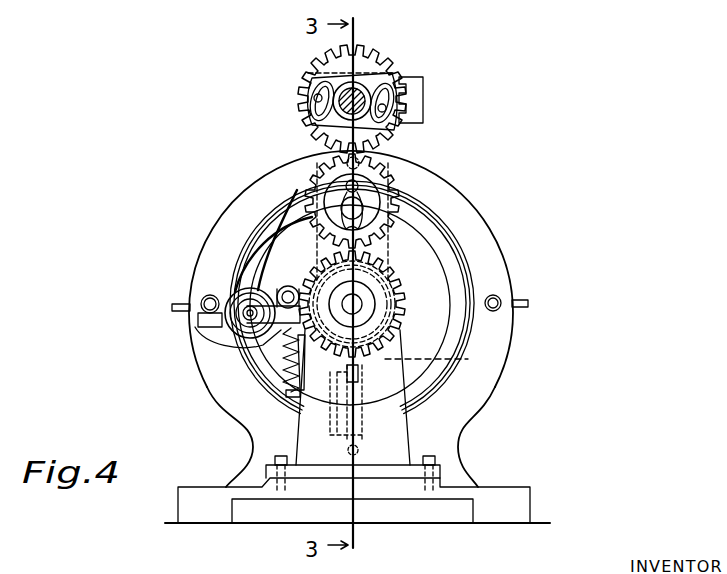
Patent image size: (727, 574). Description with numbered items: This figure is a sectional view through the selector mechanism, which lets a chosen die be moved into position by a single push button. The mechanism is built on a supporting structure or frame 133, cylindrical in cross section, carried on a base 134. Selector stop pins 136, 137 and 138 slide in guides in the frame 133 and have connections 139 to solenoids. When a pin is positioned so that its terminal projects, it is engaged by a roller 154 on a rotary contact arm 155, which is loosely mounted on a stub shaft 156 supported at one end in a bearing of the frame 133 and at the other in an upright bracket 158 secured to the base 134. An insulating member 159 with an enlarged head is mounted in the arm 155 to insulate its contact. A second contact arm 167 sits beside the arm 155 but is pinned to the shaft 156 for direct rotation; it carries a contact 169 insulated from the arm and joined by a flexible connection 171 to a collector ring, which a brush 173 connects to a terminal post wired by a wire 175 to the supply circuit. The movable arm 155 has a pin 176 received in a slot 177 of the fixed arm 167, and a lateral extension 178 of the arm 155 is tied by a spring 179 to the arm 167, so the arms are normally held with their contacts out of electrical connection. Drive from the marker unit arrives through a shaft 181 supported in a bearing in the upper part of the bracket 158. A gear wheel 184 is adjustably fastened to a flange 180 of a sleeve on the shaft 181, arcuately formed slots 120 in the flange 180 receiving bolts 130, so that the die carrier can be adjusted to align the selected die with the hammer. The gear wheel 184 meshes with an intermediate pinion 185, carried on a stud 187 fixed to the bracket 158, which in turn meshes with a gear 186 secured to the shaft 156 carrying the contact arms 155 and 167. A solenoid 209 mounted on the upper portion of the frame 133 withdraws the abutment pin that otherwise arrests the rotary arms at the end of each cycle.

The arcuately formed slots 120 is at (413, 78).
The bolts 130 is at (391, 107).
The supporting structure or frame 133 is at (477, 212).
The base 134 is at (528, 497).
The selector stop pin 136 is at (500, 300).
The selector stop pin 137 is at (359, 450).
The selector stop pin 138 is at (204, 300).
The connections 139 is at (530, 303).
The roller 154 is at (199, 327).
The rotary contact arm 155 is at (225, 332).
The stub shaft 156 is at (388, 272).
The upright bracket 158 is at (402, 429).
The insulating member 159 is at (236, 300).
The contact arm 167 is at (262, 340).
The contact 169 is at (252, 322).
The flexible connection 171 is at (262, 290).
The brush 173 is at (441, 358).
The wire 175 is at (330, 420).
The pin 176 is at (293, 287).
The slot 177 is at (288, 288).
The lateral extension 178 is at (290, 398).
The spring 179 is at (290, 376).
The flange 180 is at (398, 74).
The shaft 181 is at (355, 90).
The gear wheel 184 is at (388, 71).
The intermediate pinion 185 is at (303, 183).
The gear 186 is at (362, 300).
The stud 187 is at (362, 202).
The solenoid 209 is at (417, 100).